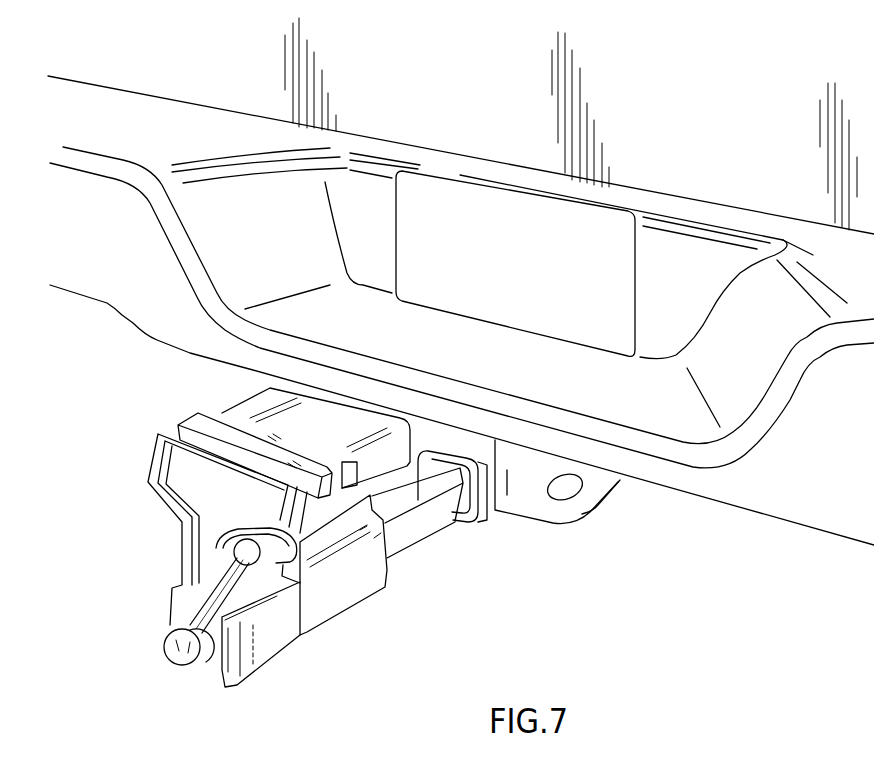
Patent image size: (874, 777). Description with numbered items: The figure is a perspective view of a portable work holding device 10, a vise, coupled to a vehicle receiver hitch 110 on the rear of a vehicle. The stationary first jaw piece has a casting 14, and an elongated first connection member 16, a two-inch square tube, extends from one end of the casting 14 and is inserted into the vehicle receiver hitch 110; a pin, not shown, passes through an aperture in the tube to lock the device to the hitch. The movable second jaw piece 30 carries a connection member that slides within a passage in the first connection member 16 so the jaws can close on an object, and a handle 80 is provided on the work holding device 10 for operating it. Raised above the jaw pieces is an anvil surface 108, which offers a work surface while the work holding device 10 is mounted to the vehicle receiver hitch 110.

The work holding device 10 is at (160, 553).
The casting 14 is at (352, 593).
The first connection member 16 is at (410, 533).
The second jaw piece 30 is at (273, 647).
The handle 80 is at (185, 656).
The anvil surface 108 is at (230, 412).
The vehicle receiver hitch 110 is at (487, 522).